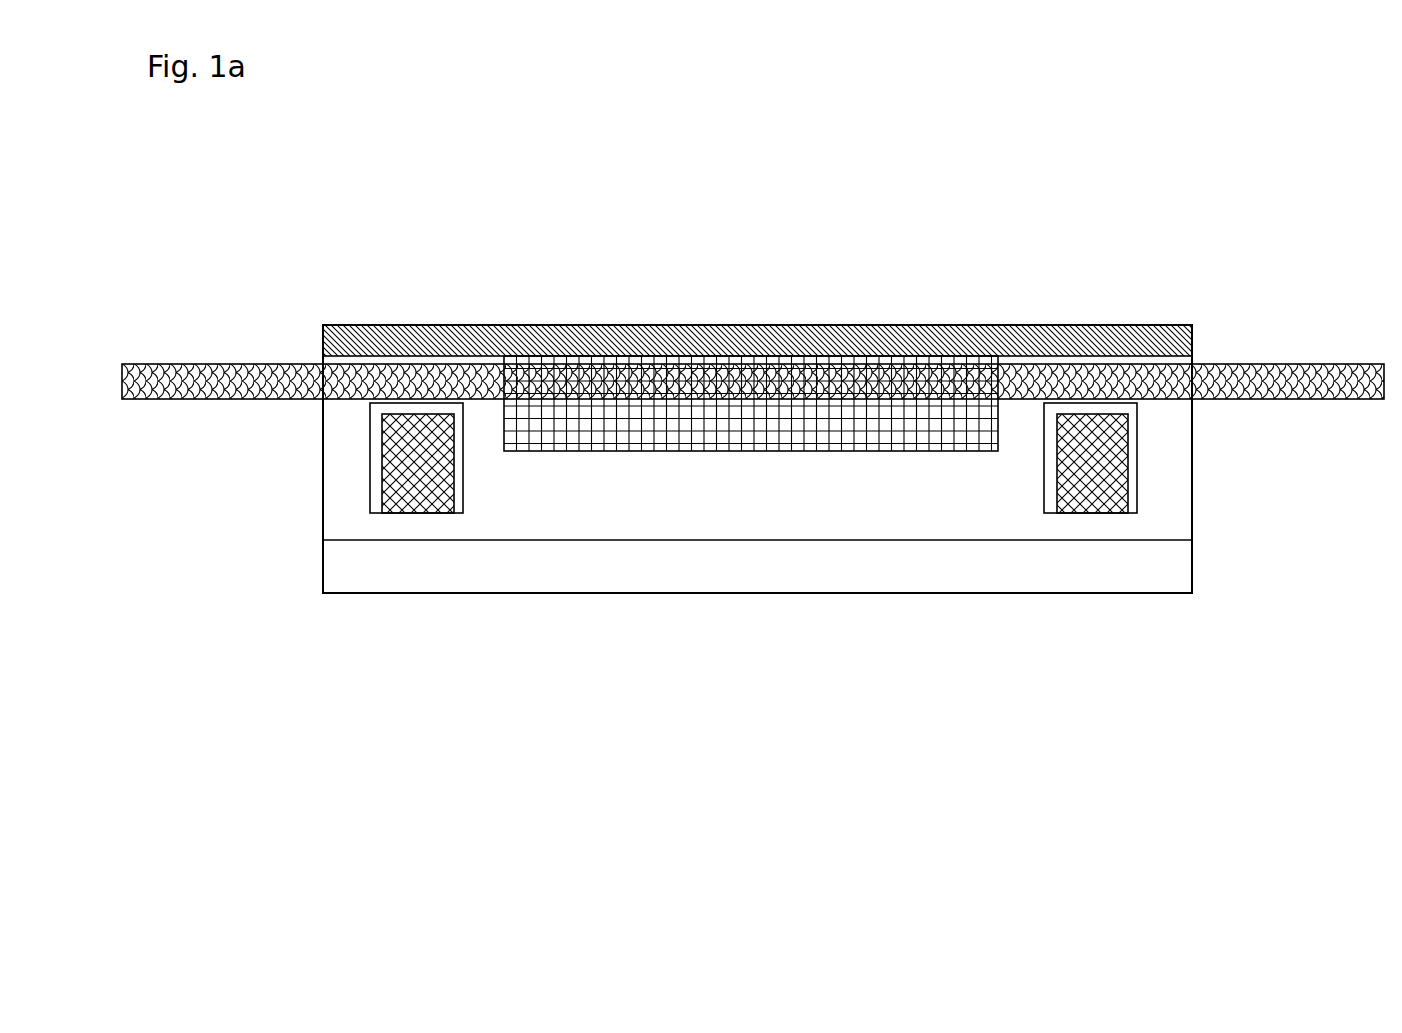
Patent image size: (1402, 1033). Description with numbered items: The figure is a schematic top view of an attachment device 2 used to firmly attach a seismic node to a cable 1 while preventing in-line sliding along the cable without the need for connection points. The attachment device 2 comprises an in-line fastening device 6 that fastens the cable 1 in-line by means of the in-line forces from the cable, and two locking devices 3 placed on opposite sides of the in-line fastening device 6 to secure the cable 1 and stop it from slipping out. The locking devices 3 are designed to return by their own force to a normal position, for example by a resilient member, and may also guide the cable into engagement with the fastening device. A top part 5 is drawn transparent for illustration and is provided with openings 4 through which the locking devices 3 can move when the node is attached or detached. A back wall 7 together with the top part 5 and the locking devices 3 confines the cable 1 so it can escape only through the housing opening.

The cable 1 is at (262, 367).
The attachment device 2 is at (504, 604).
The locking device 3 is at (417, 481).
The opening 4 is at (377, 466).
The top part 5 is at (730, 483).
The in-line fastening device 6 is at (730, 385).
The back wall 7 is at (460, 336).